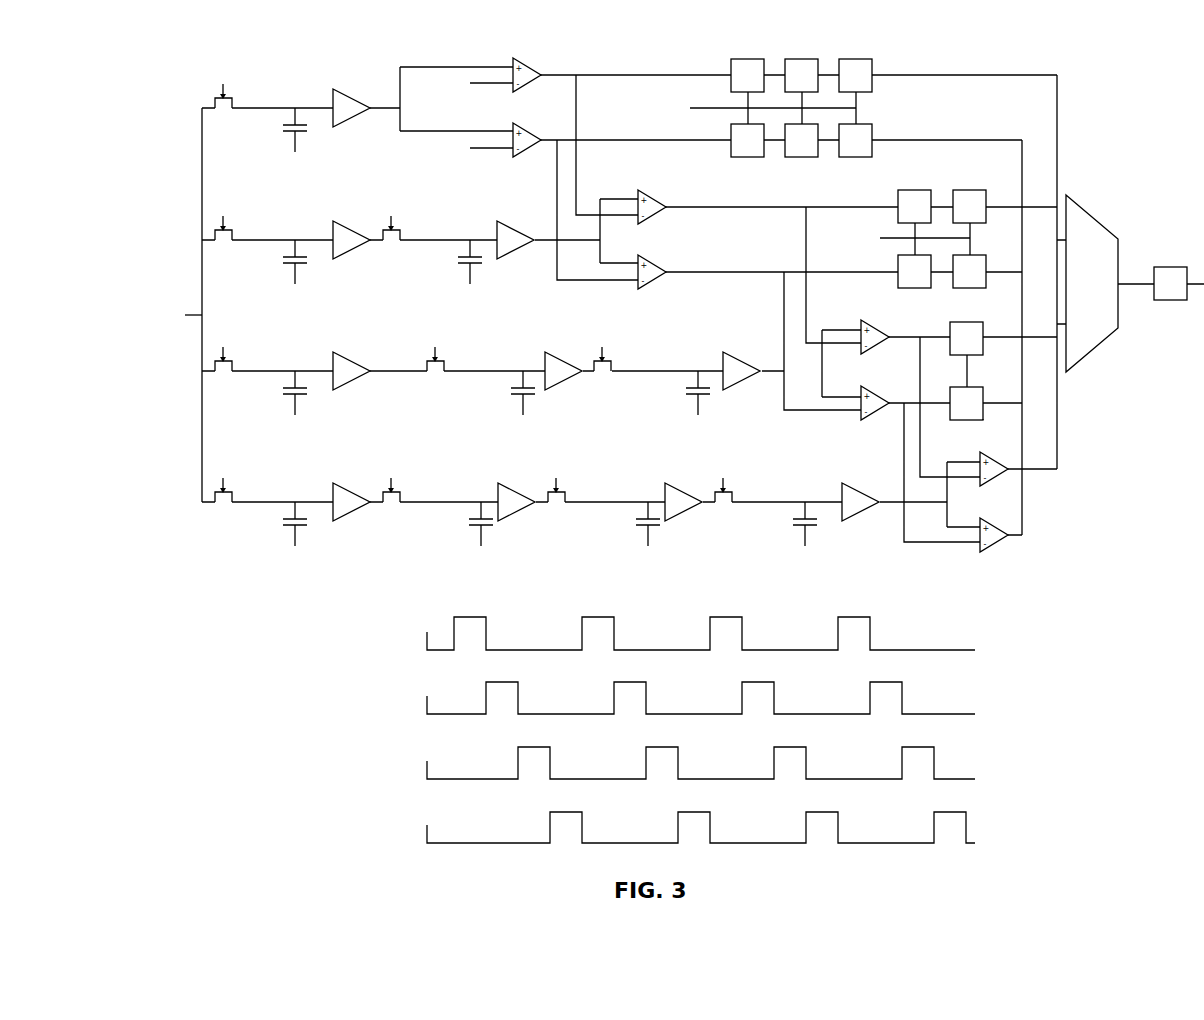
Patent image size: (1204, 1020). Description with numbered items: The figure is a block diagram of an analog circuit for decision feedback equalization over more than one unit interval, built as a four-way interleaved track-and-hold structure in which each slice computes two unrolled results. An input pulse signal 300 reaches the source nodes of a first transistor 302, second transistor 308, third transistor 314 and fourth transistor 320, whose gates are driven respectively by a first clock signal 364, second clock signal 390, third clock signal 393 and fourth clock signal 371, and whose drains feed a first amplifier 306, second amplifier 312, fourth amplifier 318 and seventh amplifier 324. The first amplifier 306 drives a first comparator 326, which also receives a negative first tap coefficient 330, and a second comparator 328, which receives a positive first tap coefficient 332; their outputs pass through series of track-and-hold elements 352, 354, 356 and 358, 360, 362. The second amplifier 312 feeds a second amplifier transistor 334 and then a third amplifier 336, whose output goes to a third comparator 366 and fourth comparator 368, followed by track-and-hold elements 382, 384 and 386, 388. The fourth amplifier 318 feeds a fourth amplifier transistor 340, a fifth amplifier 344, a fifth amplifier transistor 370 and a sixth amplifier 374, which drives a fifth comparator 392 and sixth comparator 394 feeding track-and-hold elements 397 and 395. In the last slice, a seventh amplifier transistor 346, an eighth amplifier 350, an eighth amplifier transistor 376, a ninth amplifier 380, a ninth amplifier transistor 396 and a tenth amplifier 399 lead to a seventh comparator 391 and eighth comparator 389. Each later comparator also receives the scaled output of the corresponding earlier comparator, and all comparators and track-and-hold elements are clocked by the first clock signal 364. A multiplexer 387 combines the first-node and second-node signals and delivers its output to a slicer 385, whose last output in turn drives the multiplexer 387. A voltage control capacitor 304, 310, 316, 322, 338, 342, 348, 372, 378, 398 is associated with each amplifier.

The input pulse signal 300 is at (185, 315).
The first transistor 302 is at (232, 98).
The voltage control capacitor 304 is at (283, 128).
The first amplifier 306 is at (336, 92).
The second transistor 308 is at (232, 230).
The voltage control capacitor 310 is at (283, 260).
The second amplifier 312 is at (336, 224).
The third transistor 314 is at (232, 361).
The voltage control capacitor 316 is at (283, 391).
The fourth amplifier 318 is at (336, 355).
The fourth transistor 320 is at (232, 492).
The voltage control capacitor 322 is at (283, 522).
The seventh amplifier 324 is at (336, 486).
The first comparator 326 is at (516, 61).
The second comparator 328 is at (516, 126).
The negative first tap coefficient 330 is at (470, 83).
The positive first tap coefficient 332 is at (470, 148).
The second amplifier transistor 334 is at (400, 230).
The third amplifier 336 is at (500, 224).
The voltage control capacitor 338 is at (458, 260).
The fourth amplifier transistor 340 is at (444, 361).
The voltage control capacitor 342 is at (511, 391).
The fifth amplifier 344 is at (549, 355).
The seventh amplifier transistor 346 is at (400, 492).
The voltage control capacitor 348 is at (469, 522).
The eighth amplifier 350 is at (501, 486).
The track-and-hold element 352 is at (745, 59).
The track-and-hold element 354 is at (801, 59).
The track-and-hold element 356 is at (852, 59).
The track-and-hold element 358 is at (746, 157).
The track-and-hold element 360 is at (790, 157).
The track-and-hold element 362 is at (872, 124).
The first clock signal 364 is at (690, 108).
The third comparator 366 is at (641, 193).
The fourth comparator 368 is at (641, 258).
The fifth amplifier transistor 370 is at (612, 361).
The fourth clock signal 371 is at (427, 828).
The voltage control capacitor 372 is at (686, 391).
The sixth amplifier 374 is at (726, 355).
The eighth amplifier transistor 376 is at (565, 492).
The voltage control capacitor 378 is at (636, 522).
The ninth amplifier 380 is at (668, 486).
The track-and-hold element 382 is at (918, 190).
The track-and-hold element 384 is at (965, 190).
The slicer 385 is at (1172, 267).
The track-and-hold element 386 is at (912, 288).
The multiplexer 387 is at (1112, 334).
The track-and-hold element 388 is at (967, 288).
The eighth comparator 389 is at (983, 522).
The second clock signal 390 is at (880, 238).
The seventh comparator 391 is at (983, 456).
The fifth comparator 392 is at (864, 324).
The third clock signal 393 is at (967, 372).
The sixth comparator 394 is at (864, 390).
The track-and-hold element 395 is at (983, 420).
The ninth amplifier transistor 396 is at (732, 492).
The track-and-hold element 397 is at (980, 322).
The voltage control capacitor 398 is at (793, 522).
The tenth amplifier 399 is at (845, 486).